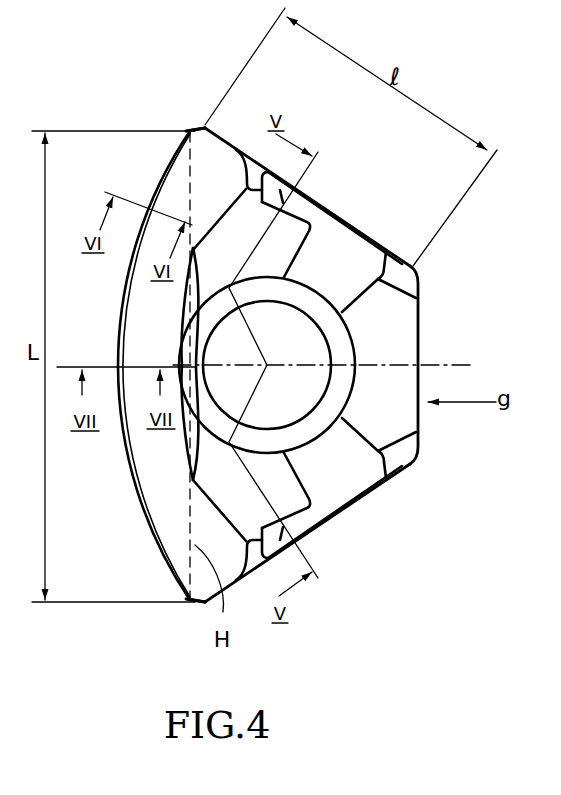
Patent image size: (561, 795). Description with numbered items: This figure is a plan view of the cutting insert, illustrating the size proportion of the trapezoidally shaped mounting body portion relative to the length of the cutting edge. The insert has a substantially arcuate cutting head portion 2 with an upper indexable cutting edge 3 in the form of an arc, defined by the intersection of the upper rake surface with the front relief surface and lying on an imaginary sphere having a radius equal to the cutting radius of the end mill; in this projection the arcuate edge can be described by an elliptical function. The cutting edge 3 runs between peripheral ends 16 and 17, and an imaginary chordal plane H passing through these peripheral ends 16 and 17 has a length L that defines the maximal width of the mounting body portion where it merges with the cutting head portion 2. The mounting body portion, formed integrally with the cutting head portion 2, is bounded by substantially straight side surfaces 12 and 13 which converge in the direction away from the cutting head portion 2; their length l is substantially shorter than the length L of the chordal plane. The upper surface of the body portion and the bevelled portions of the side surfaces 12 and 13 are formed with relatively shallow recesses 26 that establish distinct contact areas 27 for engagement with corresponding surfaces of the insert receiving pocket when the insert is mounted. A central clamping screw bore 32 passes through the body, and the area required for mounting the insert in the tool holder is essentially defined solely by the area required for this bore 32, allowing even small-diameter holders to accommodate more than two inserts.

The cutting head portion 2 is at (120, 453).
The upper cutting edge 3 is at (145, 510).
The side surface 12 is at (338, 517).
The side surface 13 is at (70, 367).
The peripheral end 16 is at (197, 607).
The peripheral end 17 is at (202, 127).
The shallow recess 26 is at (346, 265).
The contact area 27 is at (312, 211).
The clamping screw bore 32 is at (312, 357).